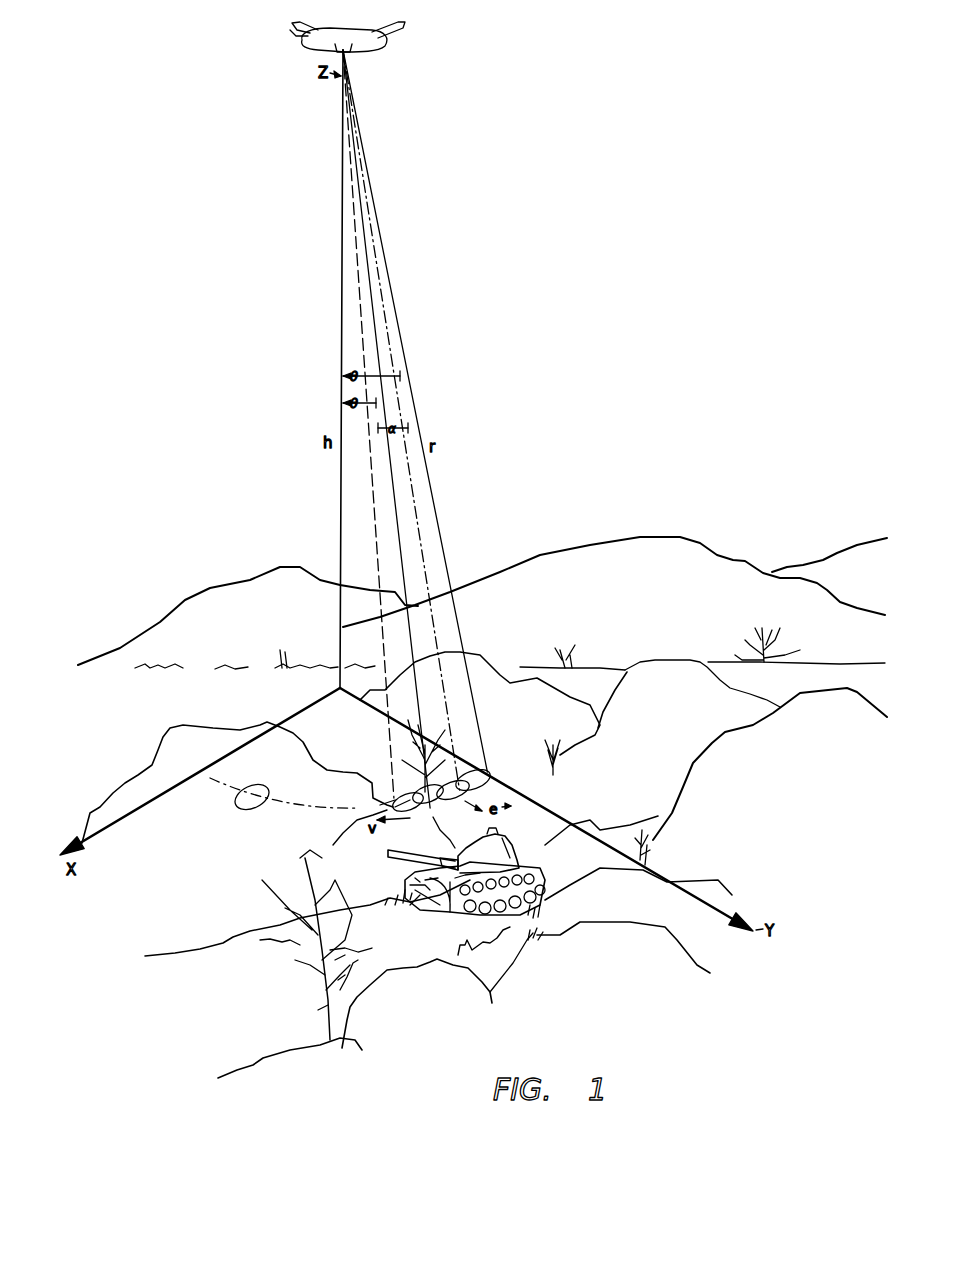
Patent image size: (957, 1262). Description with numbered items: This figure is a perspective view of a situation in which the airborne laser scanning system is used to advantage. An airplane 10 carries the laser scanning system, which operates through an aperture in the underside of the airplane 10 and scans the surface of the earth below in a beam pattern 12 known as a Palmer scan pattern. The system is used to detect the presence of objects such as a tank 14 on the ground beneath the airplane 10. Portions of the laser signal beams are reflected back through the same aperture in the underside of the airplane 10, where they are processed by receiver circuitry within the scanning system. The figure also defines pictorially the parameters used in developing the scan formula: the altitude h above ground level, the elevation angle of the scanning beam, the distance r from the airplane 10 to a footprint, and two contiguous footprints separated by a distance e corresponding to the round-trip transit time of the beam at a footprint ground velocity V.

The airplane 10 is at (365, 50).
The beam pattern 12 is at (386, 518).
The tank 14 is at (510, 843).